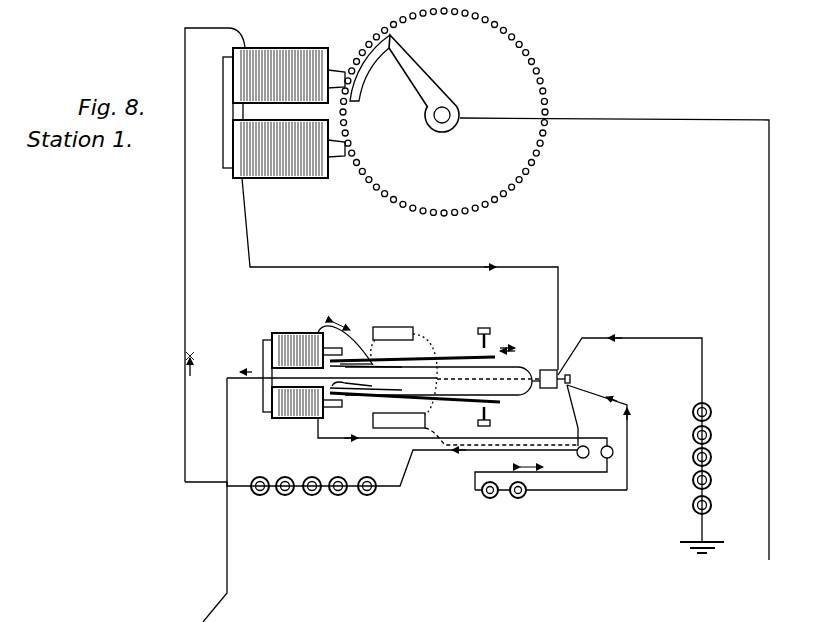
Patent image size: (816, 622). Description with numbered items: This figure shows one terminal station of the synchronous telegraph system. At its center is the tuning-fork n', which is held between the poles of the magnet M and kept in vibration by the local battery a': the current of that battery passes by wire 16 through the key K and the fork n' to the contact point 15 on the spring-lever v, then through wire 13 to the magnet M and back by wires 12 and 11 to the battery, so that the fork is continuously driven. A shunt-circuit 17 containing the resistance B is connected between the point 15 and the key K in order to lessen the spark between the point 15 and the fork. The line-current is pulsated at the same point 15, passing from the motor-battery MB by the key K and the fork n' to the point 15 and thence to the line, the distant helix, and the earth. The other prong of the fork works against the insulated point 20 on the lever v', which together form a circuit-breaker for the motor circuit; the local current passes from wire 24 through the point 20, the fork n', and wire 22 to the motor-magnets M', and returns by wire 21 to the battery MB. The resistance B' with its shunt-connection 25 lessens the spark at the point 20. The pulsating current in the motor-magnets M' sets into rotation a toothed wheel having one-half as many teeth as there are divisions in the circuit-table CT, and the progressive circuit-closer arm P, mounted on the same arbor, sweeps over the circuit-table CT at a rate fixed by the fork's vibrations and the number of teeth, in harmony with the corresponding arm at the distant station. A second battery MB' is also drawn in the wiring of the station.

The wire 11 is at (544, 468).
The wire 12 is at (462, 435).
The wire 13 is at (345, 343).
The contact point 15 is at (412, 357).
The wire 16 is at (606, 437).
The shunt-circuit 17 is at (404, 374).
The insulated point 20 is at (413, 389).
The wire 21 is at (218, 257).
The wire 22 is at (400, 274).
The wire 24 is at (476, 468).
The shunt-connection 25 is at (501, 427).
The magnet M is at (302, 367).
The motor-magnet M' is at (284, 122).
The circuit-closing arm P is at (443, 75).
The circuit-table CT is at (444, 112).
The resistance B is at (393, 334).
The resistance B' is at (399, 420).
The key K is at (621, 370).
The motor-battery MB is at (313, 480).
The main battery MB' is at (709, 478).
The local battery a' is at (551, 498).
The fork n' is at (383, 379).
The spring-lever v is at (470, 342).
The lever v' is at (470, 414).